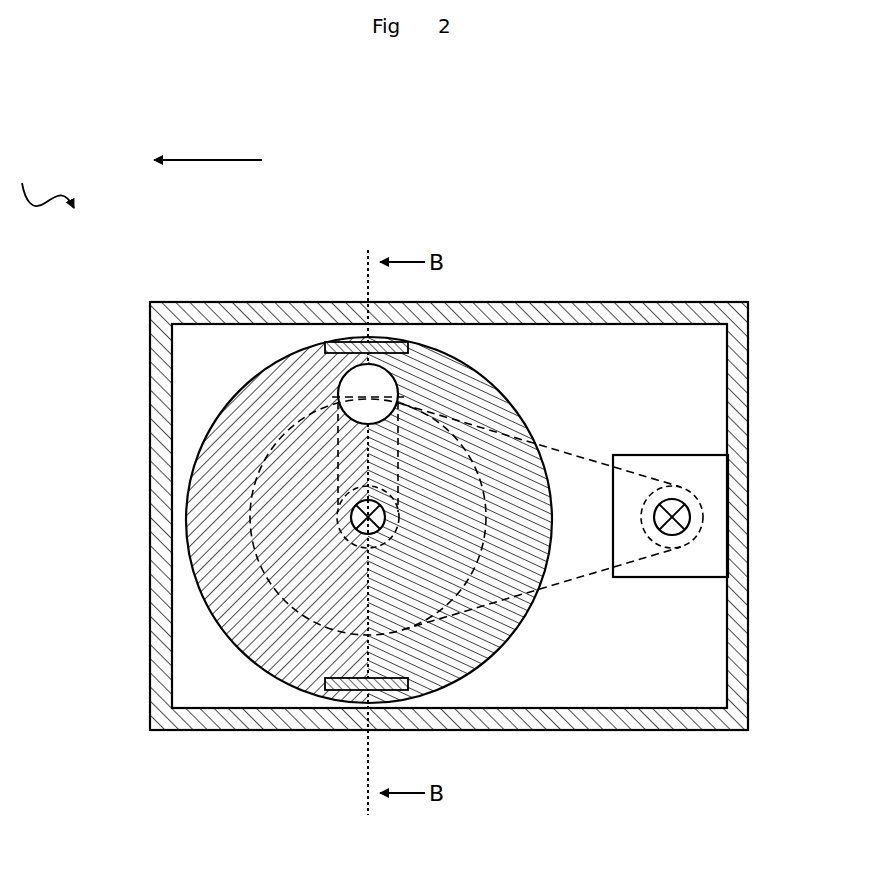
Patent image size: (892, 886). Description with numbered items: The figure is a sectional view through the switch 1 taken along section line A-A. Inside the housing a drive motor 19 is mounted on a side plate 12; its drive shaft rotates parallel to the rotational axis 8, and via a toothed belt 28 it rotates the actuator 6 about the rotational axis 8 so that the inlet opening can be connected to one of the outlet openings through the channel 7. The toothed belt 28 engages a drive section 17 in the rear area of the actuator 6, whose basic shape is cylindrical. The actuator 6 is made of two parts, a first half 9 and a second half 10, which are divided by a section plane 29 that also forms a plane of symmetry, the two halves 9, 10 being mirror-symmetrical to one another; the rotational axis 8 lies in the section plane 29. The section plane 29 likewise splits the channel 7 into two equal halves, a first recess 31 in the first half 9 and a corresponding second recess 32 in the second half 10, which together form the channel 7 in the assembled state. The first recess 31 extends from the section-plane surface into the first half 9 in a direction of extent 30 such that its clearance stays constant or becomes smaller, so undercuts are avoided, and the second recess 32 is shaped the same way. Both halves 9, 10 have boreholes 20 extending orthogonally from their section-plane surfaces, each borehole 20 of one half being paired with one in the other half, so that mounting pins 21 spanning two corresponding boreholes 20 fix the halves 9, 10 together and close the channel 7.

The switch 1 is at (44, 184).
The actuator 6 is at (213, 452).
The channel 7 is at (362, 383).
The rotational axis 8 is at (366, 514).
The first half 9 is at (337, 416).
The second half 10 is at (394, 459).
The side plate 12 is at (742, 350).
The drive section 17 is at (282, 552).
The drive motor 19 is at (672, 463).
The boreholes 20 is at (340, 341).
The mounting pins 21 is at (257, 303).
The toothed belt 28 is at (560, 450).
The section plane 29 is at (372, 567).
The direction of extent 30 is at (208, 148).
The first recess 31 is at (352, 442).
The second recess 32 is at (400, 430).